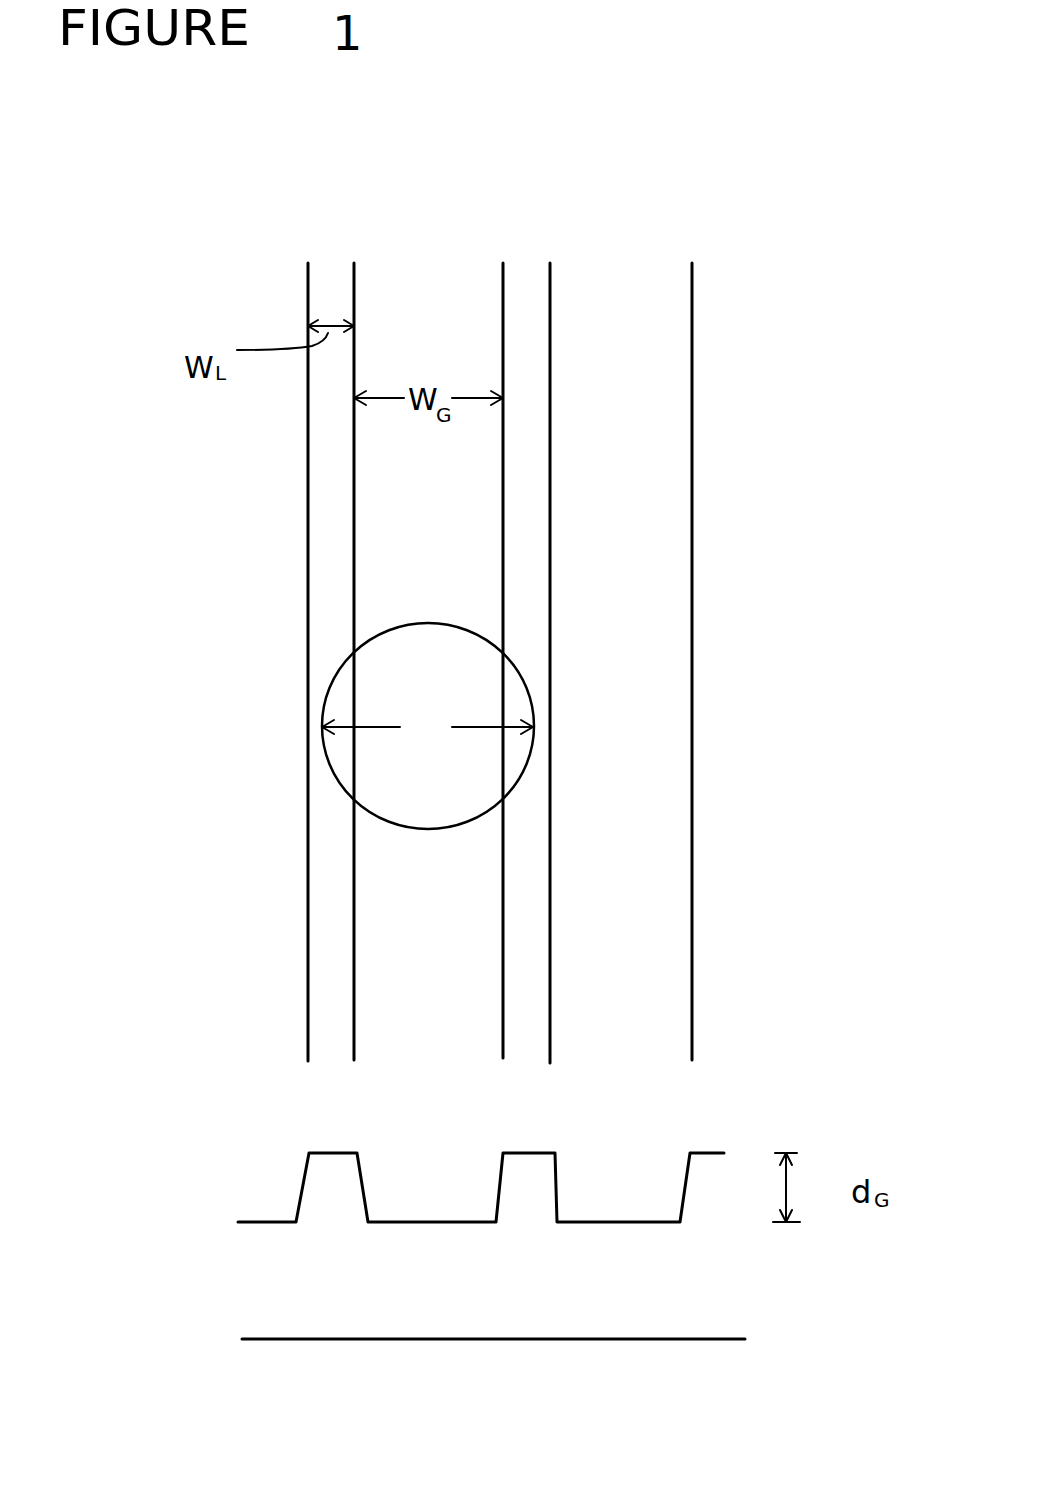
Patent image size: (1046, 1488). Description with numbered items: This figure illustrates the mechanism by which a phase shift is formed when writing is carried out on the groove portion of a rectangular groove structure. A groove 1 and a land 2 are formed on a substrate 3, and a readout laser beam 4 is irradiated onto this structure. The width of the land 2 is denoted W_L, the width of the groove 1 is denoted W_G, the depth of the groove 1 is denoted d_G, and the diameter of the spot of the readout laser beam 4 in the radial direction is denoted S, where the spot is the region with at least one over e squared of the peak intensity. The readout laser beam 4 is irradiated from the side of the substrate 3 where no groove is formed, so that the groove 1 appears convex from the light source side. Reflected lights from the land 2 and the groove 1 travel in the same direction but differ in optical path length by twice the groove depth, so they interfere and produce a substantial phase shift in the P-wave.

The groove 1 is at (418, 278).
The land 2 is at (325, 265).
The substrate 3 is at (755, 1287).
The readout laser beam 4 is at (403, 618).